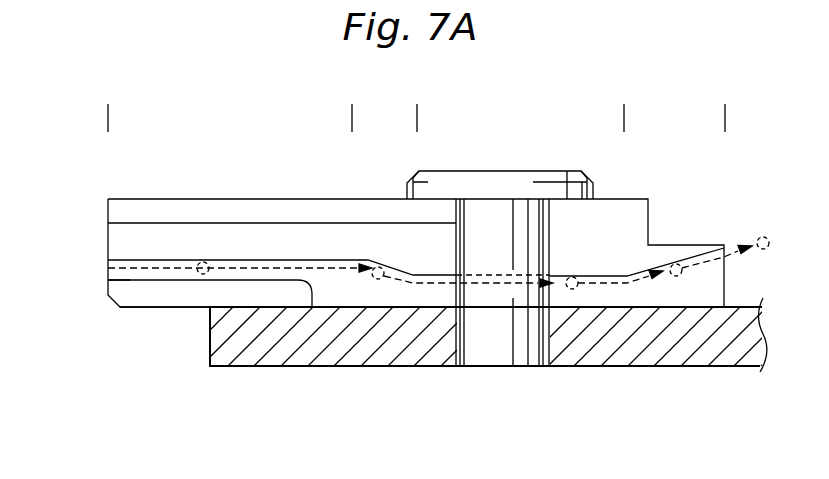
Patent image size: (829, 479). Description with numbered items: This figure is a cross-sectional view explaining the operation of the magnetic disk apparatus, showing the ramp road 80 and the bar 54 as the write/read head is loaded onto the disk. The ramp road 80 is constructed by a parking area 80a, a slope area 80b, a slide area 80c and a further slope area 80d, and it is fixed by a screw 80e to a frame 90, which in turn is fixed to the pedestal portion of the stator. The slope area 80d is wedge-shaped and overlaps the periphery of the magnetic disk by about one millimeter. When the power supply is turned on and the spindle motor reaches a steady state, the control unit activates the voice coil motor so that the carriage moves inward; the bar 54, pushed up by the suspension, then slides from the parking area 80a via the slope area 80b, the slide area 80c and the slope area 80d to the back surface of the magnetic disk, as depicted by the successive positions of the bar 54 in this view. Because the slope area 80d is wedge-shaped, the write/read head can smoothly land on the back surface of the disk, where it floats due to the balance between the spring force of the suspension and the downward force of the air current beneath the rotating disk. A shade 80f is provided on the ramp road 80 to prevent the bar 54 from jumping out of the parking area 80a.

The ramp road 80 is at (122, 240).
The bar 54 is at (102, 268).
The parking area 80a is at (352, 118).
The slope area 80b is at (417, 118).
The slide area 80c is at (417, 118).
The slope area 80d is at (624, 118).
The screw 80e is at (515, 190).
The shade 80f is at (128, 297).
The frame 90 is at (239, 350).